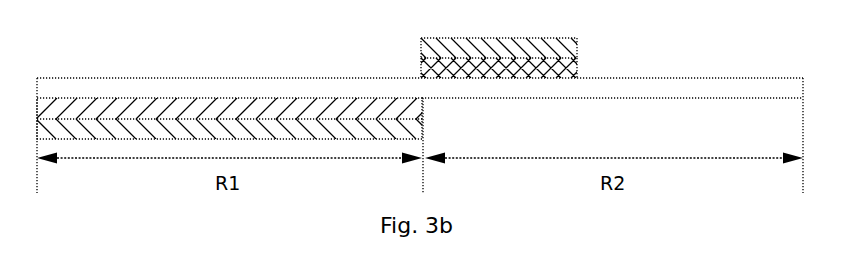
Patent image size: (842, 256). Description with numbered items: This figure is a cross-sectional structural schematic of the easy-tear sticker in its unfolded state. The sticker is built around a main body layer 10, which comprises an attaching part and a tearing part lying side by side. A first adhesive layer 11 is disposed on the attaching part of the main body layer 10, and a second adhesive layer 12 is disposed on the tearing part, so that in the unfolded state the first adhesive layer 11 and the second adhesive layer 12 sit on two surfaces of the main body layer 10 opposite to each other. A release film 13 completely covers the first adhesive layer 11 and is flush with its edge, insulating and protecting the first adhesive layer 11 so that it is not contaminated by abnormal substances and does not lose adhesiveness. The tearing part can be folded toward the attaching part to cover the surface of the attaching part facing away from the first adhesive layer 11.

The main body layer 10 is at (162, 95).
The first adhesive layer 11 is at (277, 98).
The second adhesive layer 12 is at (422, 65).
The release film 13 is at (414, 133).